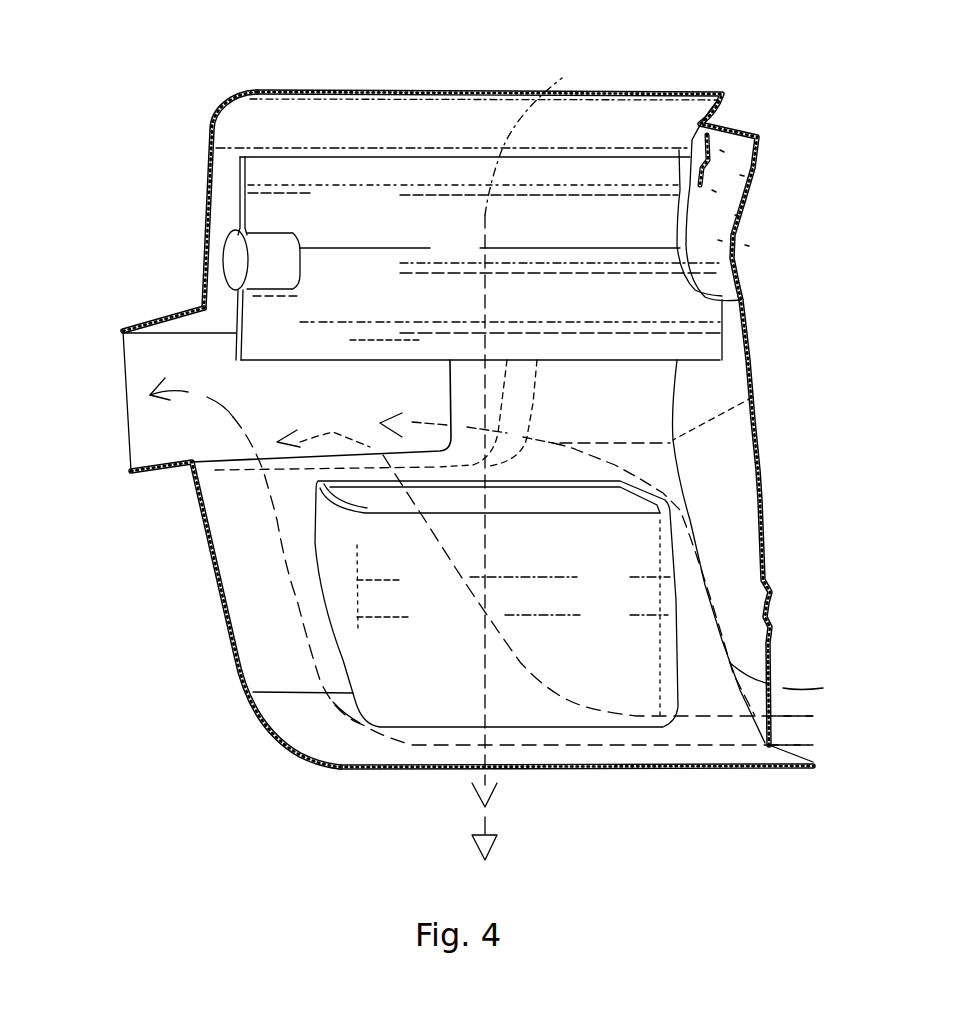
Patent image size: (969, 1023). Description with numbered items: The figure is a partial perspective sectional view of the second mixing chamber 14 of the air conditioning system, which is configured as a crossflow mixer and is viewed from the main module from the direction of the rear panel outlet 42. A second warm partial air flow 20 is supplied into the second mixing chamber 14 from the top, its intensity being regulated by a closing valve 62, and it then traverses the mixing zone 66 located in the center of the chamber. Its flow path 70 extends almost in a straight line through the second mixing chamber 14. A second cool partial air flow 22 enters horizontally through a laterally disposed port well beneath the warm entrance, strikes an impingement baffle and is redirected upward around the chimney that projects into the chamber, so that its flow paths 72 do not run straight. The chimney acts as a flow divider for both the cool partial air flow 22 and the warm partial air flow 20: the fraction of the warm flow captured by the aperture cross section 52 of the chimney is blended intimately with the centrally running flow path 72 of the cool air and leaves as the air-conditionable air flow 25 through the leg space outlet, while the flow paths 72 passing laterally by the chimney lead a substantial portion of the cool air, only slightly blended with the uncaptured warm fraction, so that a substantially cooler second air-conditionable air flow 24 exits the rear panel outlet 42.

The second mixing chamber 14 is at (428, 387).
The second warm partial air flow 20 is at (617, 49).
The second cool partial air flow 22 is at (873, 718).
The second air-conditionable air flow 24 is at (130, 403).
The air-conditionable air flow 25 is at (477, 830).
The rear panel outlet 42 is at (128, 437).
The entrance port of the chimney 52 is at (387, 502).
The closing valve 62 is at (258, 215).
The mixing zone 66 is at (278, 383).
The flow path of the warm partial air flow 70 is at (485, 234).
The flow path of the cool partial air flow 72 is at (650, 487).